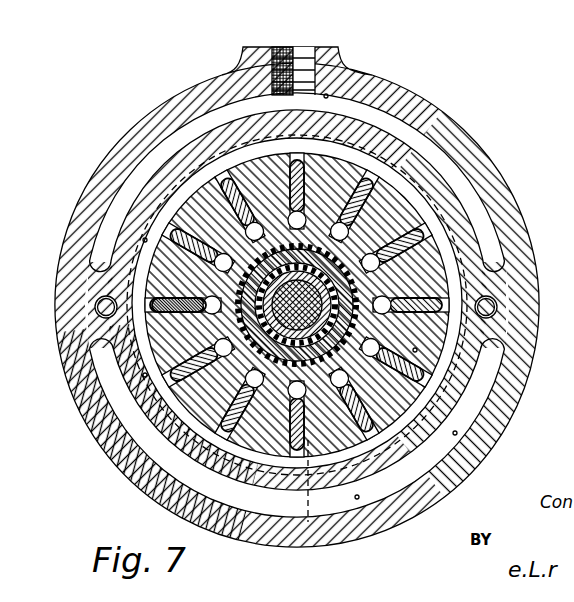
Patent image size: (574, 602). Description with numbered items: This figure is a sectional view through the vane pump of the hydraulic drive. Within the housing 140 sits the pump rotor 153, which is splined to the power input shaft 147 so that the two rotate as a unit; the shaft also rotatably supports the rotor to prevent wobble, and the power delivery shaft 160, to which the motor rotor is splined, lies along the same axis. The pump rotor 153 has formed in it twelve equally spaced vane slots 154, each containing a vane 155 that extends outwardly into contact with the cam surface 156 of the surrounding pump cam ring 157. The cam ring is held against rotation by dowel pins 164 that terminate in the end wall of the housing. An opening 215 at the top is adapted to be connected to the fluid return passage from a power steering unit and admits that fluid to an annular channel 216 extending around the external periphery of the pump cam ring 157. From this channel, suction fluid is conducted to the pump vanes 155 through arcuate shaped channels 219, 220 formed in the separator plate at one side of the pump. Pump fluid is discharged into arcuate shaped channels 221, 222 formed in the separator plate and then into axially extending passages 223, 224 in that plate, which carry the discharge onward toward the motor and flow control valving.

The housing 140 is at (443, 130).
The power input shaft 147 is at (215, 320).
The pump rotor 153 is at (455, 433).
The vane slots 154 is at (243, 226).
The vane 155 is at (415, 350).
The cam surface 156 is at (145, 240).
The pump cam ring 157 is at (470, 186).
The power delivery shaft 160 is at (284, 333).
The dowel pins 164 is at (97, 303).
The opening 215 is at (300, 58).
The annular channel 216 is at (258, 100).
The arcuate shaped channel 219 is at (145, 375).
The arcuate shaped channel 220 is at (447, 232).
The arcuate shaped channel 221 is at (290, 178).
The arcuate shaped channel 222 is at (357, 497).
The axially extending passage 223 is at (326, 96).
The axially extending passage 224 is at (302, 491).